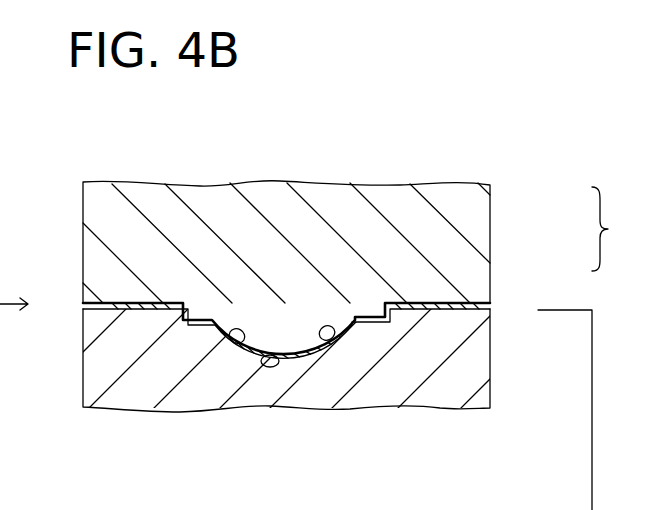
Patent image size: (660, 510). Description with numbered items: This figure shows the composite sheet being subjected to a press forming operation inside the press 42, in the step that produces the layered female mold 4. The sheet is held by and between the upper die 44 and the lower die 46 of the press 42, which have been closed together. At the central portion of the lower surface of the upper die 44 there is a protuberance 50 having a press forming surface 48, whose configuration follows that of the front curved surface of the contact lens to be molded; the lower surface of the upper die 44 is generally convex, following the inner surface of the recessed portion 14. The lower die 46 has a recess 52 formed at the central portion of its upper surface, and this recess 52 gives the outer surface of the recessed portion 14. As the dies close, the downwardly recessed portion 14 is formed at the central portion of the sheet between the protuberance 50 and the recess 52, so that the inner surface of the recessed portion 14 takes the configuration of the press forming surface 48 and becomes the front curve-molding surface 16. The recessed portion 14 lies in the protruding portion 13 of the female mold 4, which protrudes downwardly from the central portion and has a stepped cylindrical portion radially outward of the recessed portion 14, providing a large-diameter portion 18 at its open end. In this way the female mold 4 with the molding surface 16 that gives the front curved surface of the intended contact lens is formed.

The press 42 is at (617, 229).
The upper die 44 is at (494, 208).
The lower die 46 is at (493, 355).
The press forming surface 48 is at (256, 343).
The protuberance 50 is at (301, 341).
The large-diameter portion 18 is at (182, 312).
The protruding portion 13 is at (183, 337).
The recess 52 is at (225, 340).
The recessed portion 14 is at (262, 362).
The molding surface 16 is at (341, 338).
The female mold 4 is at (377, 331).